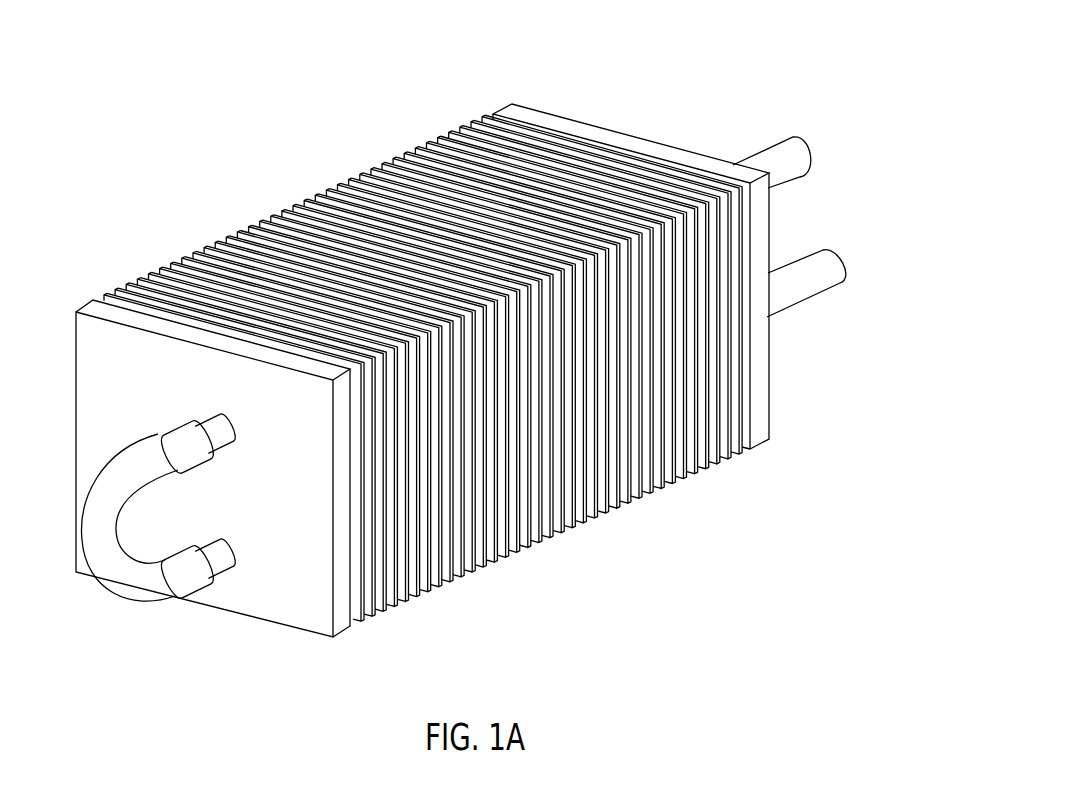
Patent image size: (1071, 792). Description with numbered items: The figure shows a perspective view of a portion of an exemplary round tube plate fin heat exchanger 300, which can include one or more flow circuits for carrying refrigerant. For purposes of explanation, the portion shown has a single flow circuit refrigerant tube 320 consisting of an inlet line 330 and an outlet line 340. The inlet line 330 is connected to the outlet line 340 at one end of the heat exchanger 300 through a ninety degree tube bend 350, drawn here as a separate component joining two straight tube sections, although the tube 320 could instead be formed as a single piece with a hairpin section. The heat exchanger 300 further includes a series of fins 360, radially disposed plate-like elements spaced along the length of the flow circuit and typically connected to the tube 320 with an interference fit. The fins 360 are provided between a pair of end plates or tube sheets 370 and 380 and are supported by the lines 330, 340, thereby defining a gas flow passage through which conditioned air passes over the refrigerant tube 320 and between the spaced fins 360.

The round tube plate fin heat exchanger 300 is at (747, 97).
The refrigerant tube 320 is at (876, 220).
The inlet line 330 is at (788, 163).
The outlet line 340 is at (790, 300).
The tube bend 350 is at (122, 585).
The fins 360 is at (445, 180).
The end plate 370 is at (305, 602).
The end plate 380 is at (560, 112).